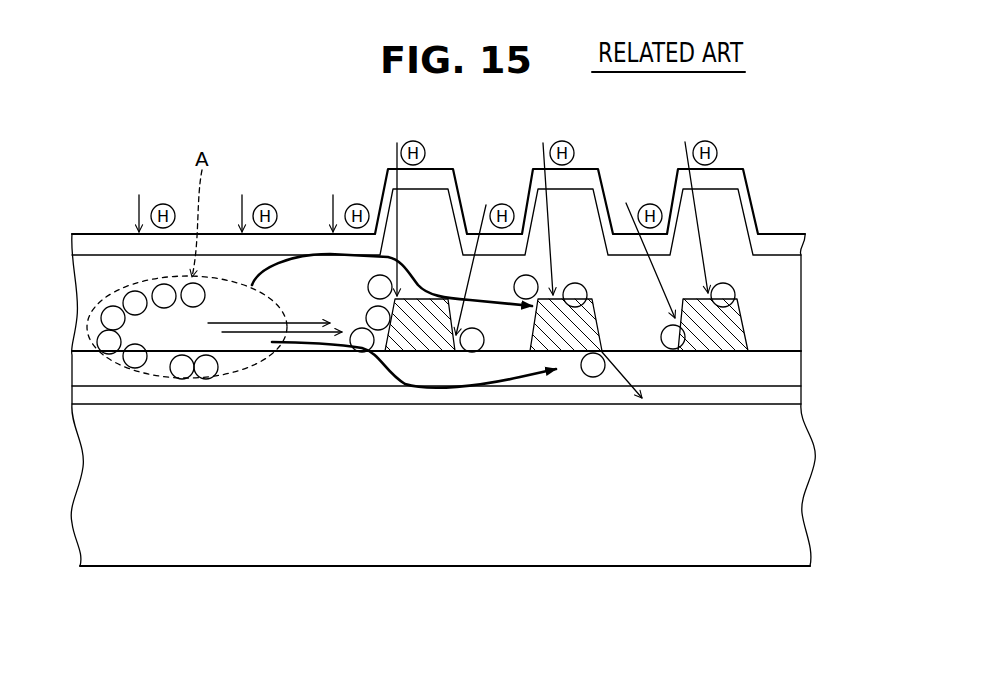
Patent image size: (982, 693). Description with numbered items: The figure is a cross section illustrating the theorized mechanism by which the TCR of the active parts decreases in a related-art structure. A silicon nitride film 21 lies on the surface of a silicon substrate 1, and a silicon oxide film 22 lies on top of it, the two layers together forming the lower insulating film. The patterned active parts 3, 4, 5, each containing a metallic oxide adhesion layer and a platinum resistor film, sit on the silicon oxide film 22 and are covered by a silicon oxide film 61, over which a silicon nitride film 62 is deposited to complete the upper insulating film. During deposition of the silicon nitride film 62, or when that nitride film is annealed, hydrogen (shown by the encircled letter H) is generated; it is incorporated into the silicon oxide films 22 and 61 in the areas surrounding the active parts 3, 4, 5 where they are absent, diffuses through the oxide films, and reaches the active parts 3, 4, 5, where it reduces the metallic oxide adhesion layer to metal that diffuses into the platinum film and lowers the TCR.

The silicon substrate 1 is at (800, 467).
The silicon nitride film 21 is at (792, 393).
The silicon oxide film 22 is at (792, 363).
The active part 3 is at (626, 264).
The active part 4 is at (683, 264).
The active part 5 is at (742, 318).
The silicon oxide film 61 is at (792, 292).
The silicon nitride film 62 is at (792, 242).